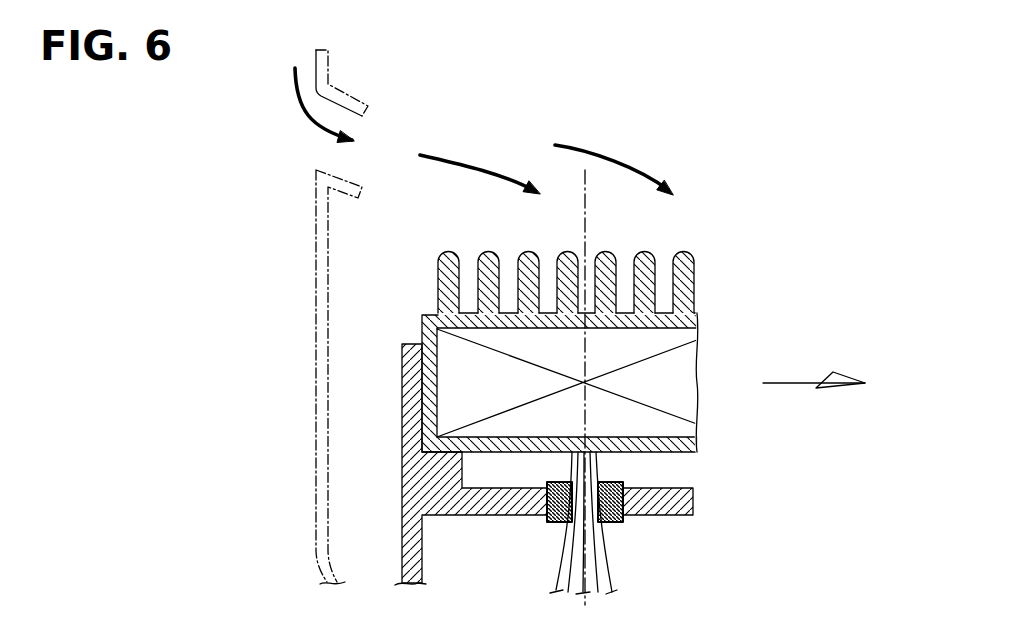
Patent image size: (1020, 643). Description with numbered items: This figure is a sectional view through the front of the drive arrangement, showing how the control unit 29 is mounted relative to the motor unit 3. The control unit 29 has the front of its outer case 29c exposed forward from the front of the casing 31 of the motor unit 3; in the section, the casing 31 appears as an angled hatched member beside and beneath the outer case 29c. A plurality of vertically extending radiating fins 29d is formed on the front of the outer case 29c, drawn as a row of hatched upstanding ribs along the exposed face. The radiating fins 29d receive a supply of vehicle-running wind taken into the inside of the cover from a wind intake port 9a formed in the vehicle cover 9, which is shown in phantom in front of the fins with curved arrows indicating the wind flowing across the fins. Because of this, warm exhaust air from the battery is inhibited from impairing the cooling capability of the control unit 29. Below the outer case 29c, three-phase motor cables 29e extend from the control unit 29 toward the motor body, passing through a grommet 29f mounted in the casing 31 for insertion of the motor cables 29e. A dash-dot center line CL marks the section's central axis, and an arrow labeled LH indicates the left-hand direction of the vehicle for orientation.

The vehicle cover 9 is at (312, 207).
The wind intake port 9a is at (330, 105).
The control unit 29 is at (435, 388).
The outer case 29c is at (412, 316).
The radiating fins 29d is at (527, 252).
The three-phase motor cables 29e is at (583, 583).
The grommet 29f is at (558, 522).
The casing 31 is at (392, 482).
The motor unit 3 is at (436, 464).
The center line CL is at (585, 232).
The left-hand direction LH is at (836, 383).